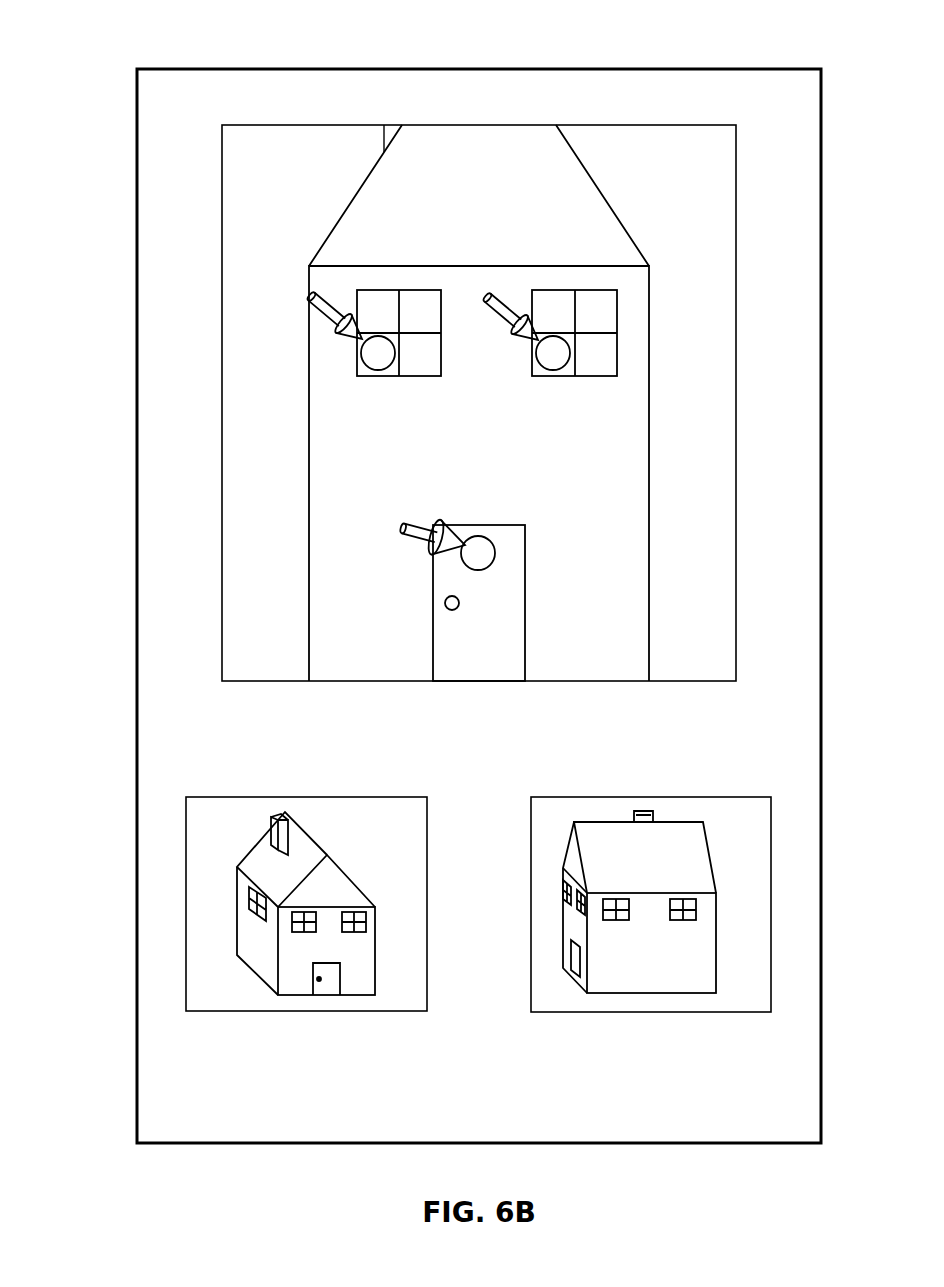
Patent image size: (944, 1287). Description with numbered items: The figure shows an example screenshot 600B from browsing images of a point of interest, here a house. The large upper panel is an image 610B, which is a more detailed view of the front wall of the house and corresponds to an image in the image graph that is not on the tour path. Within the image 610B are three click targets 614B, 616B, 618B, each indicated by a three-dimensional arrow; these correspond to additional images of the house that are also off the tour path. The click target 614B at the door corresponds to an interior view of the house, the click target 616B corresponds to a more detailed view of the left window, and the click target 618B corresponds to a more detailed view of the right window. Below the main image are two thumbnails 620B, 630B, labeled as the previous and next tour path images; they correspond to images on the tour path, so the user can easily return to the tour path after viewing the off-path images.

The screenshot 600B is at (142, 48).
The image 610B is at (252, 120).
The click target 614B is at (481, 536).
The click target 616B is at (378, 371).
The click target 618B is at (553, 371).
The thumbnail 620B is at (254, 792).
The thumbnail 630B is at (581, 792).